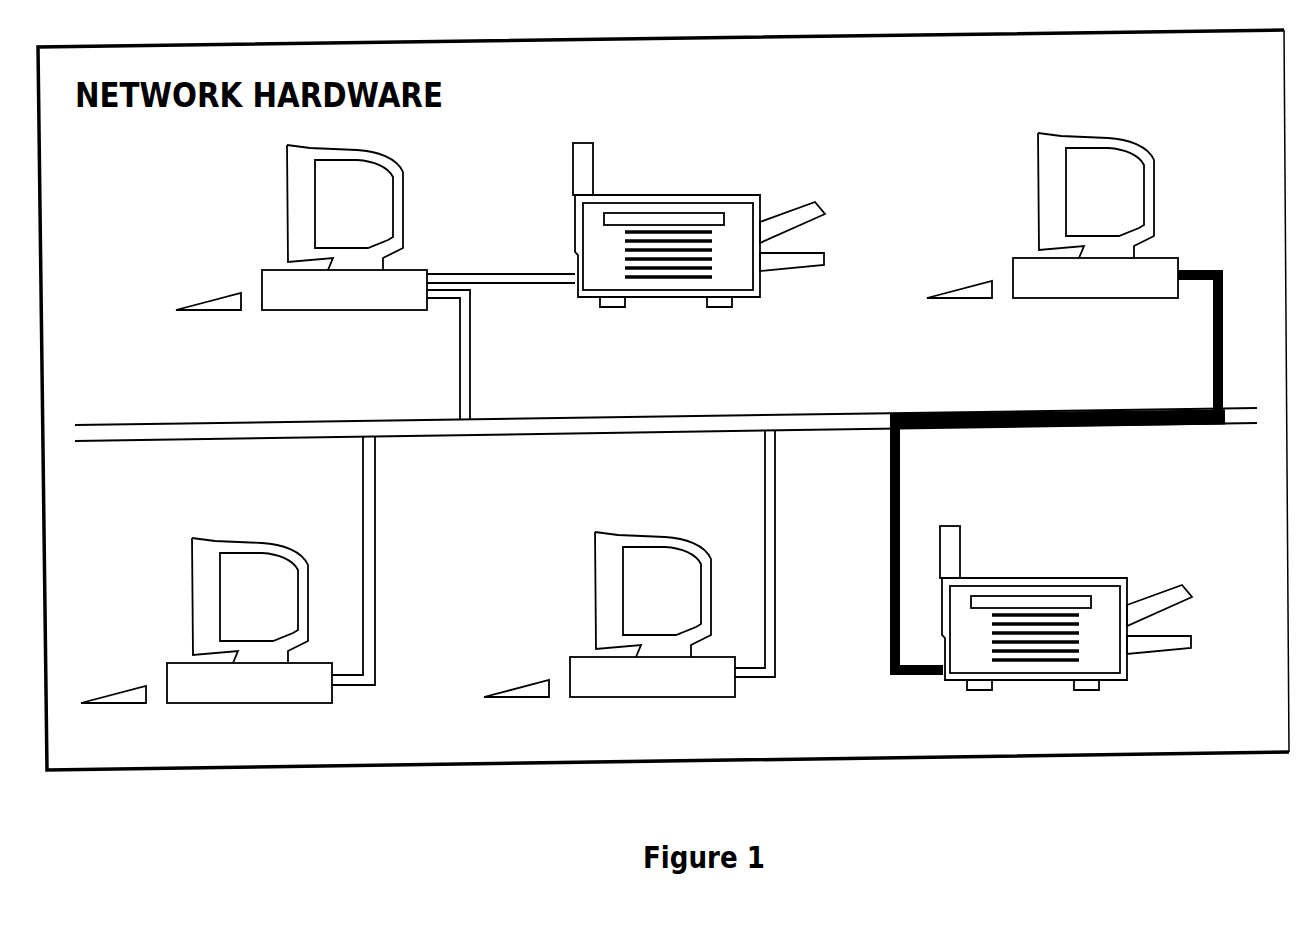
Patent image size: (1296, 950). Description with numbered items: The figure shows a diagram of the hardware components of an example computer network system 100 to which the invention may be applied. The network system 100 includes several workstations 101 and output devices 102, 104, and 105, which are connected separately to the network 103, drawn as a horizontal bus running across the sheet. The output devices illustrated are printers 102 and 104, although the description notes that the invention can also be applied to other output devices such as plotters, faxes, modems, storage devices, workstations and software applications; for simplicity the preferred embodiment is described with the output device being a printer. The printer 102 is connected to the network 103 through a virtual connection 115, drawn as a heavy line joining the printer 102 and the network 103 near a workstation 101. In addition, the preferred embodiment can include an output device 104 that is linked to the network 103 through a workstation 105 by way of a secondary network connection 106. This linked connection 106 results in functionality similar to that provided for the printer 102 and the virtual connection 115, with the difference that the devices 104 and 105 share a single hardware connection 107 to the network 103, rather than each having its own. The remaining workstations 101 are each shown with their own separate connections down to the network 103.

The computer network system 100 is at (902, 114).
The workstation 101 is at (629, 418).
The printer 102 is at (1045, 578).
The network 103 is at (183, 425).
The printer 104 is at (650, 195).
The workstation 105 is at (301, 227).
The secondary network connection 106 is at (470, 271).
The hardware connection 107 is at (470, 333).
The virtual connection 115 is at (1203, 268).